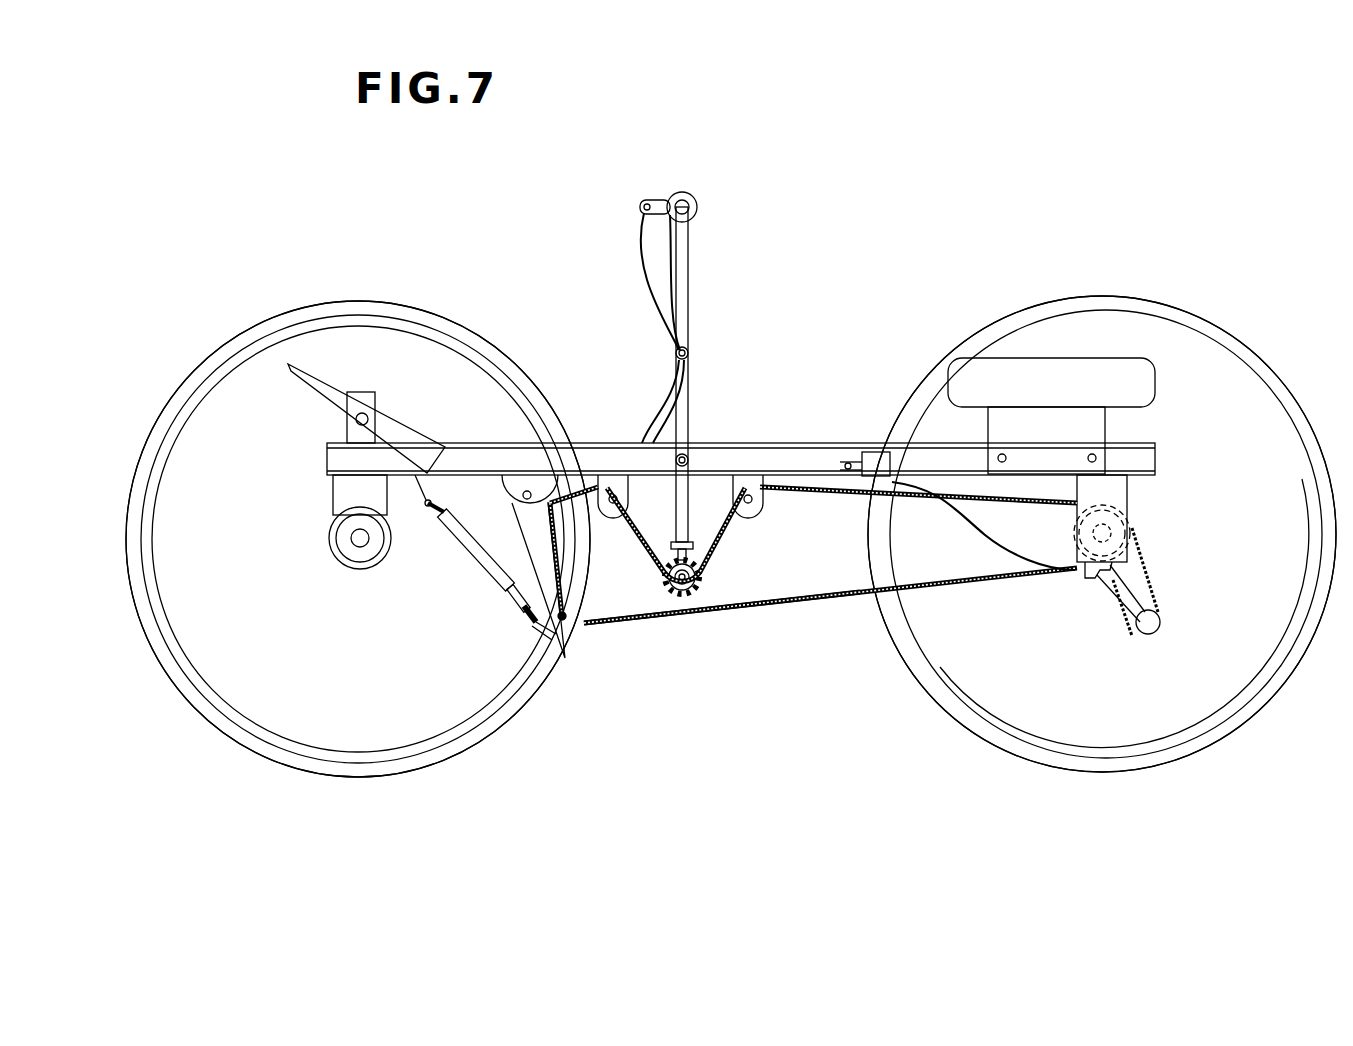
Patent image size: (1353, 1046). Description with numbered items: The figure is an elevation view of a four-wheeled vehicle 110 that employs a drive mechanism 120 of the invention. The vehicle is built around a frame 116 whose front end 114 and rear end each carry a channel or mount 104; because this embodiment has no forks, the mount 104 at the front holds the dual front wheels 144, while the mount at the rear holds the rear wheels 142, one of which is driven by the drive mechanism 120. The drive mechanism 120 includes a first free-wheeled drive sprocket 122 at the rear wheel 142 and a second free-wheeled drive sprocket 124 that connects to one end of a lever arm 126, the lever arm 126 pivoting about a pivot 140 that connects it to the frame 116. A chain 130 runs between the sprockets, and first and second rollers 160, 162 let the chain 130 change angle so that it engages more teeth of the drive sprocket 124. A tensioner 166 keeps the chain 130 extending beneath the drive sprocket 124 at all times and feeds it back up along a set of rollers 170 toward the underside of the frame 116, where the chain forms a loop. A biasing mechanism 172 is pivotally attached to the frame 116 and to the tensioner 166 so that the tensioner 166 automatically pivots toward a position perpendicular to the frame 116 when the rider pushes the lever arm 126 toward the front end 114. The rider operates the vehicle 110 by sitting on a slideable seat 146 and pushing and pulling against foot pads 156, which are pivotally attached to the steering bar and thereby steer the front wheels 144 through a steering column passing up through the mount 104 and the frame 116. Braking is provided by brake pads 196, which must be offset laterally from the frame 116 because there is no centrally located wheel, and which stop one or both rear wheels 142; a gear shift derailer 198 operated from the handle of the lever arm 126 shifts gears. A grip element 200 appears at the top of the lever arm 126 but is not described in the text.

The front end 114 is at (150, 356).
The front wheels 144 is at (295, 310).
The four-wheeled vehicle 110 is at (1135, 265).
The rear wheel 142 is at (1223, 328).
The frame 116 is at (760, 441).
The foot pads 156 is at (340, 368).
The channel or mount 104 is at (333, 500).
The lever arm 126 is at (690, 386).
The handle grip 200 is at (640, 207).
The pivot 140 is at (676, 461).
The second roller 162 is at (626, 512).
The first roller 160 is at (763, 492).
The second free-wheeled drive sprocket 124 is at (700, 585).
The chain 130 is at (710, 612).
The drive mechanism 120 is at (724, 730).
The set of rollers 170 is at (546, 566).
The biasing mechanism 172 is at (468, 552).
The tensioner 166 is at (517, 588).
The slideable seat 146 is at (1155, 382).
The first free-wheeled drive sprocket 122 is at (1130, 533).
The gear shift derailer 198 is at (1160, 625).
The brake pads 196 is at (870, 447).